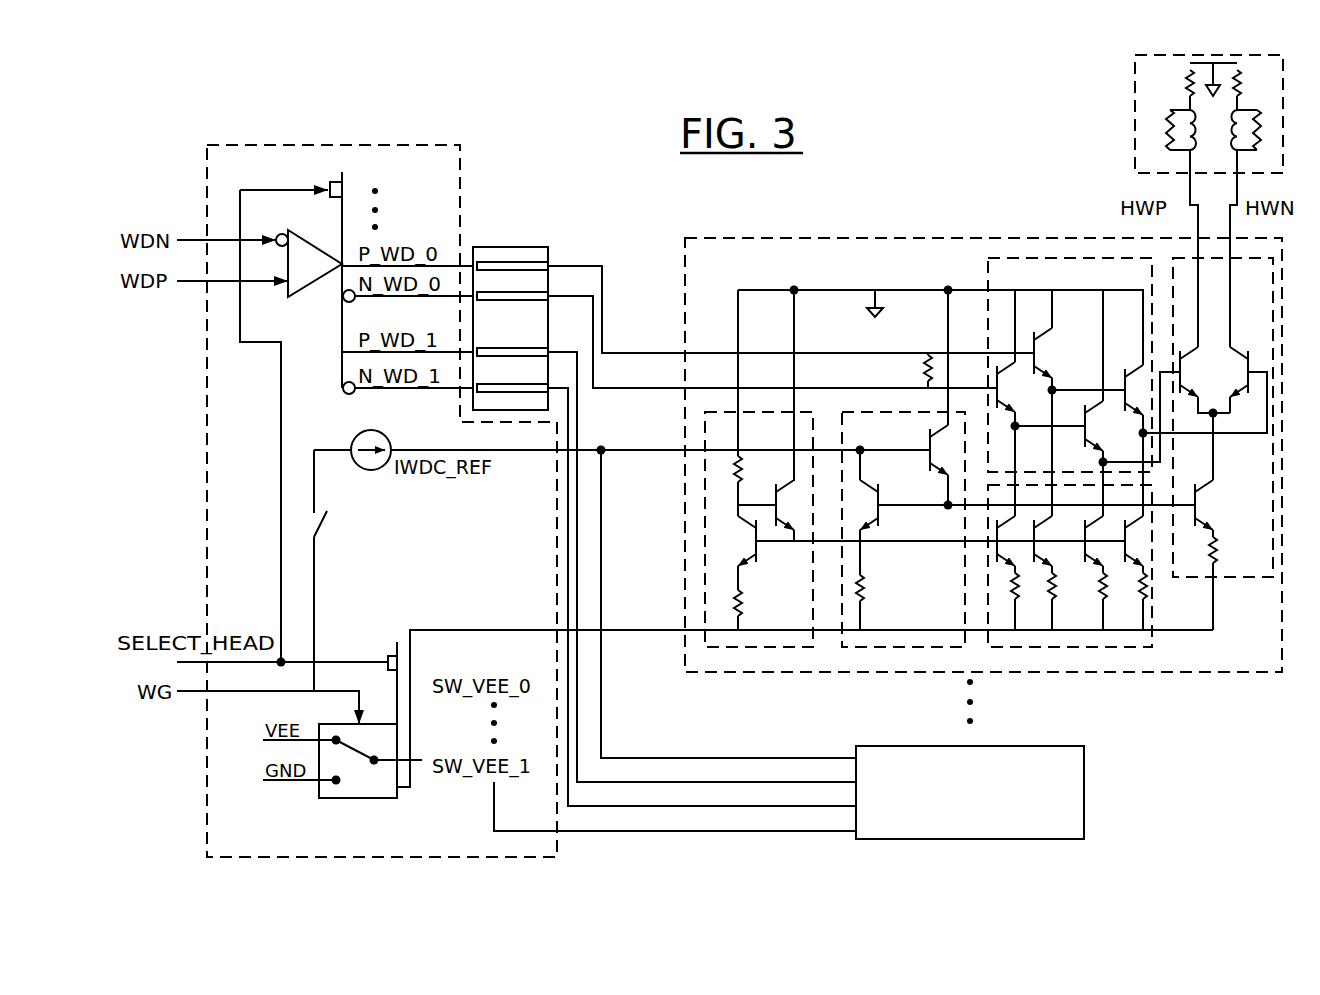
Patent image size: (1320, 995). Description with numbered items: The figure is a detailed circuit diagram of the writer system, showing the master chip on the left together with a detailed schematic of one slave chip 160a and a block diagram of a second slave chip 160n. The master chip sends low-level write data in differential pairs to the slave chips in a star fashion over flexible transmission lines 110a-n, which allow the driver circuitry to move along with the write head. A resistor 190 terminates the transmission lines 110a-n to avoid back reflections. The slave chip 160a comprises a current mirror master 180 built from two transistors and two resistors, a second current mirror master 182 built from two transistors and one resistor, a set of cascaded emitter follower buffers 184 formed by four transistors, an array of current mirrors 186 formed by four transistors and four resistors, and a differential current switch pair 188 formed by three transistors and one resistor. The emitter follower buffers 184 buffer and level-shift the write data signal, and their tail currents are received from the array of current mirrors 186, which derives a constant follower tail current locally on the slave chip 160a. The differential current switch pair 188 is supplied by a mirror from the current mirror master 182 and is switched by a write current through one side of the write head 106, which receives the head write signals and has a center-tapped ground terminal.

The write head circuit 106 is at (1178, 55).
The transmission lines 110a-n is at (508, 238).
The slave chip 160a is at (785, 238).
The slave chip 160n is at (940, 746).
The current mirror master 180 is at (759, 529).
The current mirror master 182 is at (903, 529).
The cascaded emitter follower buffers 184 is at (1127, 387).
The array of current mirrors 186 is at (1166, 640).
The differential current switch pair 188 is at (1223, 390).
The resistor 190 is at (907, 370).